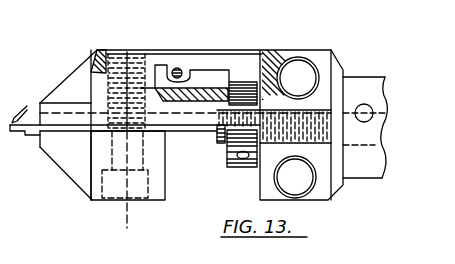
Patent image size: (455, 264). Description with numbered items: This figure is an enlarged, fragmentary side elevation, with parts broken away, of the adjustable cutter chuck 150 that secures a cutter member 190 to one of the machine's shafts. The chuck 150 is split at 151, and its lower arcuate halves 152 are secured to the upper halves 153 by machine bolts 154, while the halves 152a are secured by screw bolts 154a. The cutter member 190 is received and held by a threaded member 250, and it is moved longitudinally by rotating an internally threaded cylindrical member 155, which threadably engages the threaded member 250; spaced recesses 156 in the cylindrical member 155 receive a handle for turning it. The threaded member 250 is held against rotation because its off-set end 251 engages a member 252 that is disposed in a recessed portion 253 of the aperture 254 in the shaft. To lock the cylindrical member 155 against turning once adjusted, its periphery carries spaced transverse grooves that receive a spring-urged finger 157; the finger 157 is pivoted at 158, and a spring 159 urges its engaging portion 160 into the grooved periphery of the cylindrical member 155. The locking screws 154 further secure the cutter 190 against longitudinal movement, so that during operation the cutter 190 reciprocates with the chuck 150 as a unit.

The cutter chuck 150 is at (97, 51).
The split 151 is at (63, 126).
The lower arcuate halves 152 is at (69, 175).
The halves 152a is at (333, 181).
The upper halves 153 is at (263, 80).
The machine bolts 154 is at (115, 198).
The screw bolts 154a is at (307, 180).
The internally threaded cylindrical member 155 is at (238, 168).
The spaced recesses 156 is at (229, 160).
The spring-urged finger 157 is at (203, 58).
The pivot 158 is at (178, 68).
The spring 159 is at (104, 79).
The engaging portion 160 is at (245, 82).
The cutter member 190 is at (30, 101).
The threaded member 250 is at (218, 136).
The off-set end 251 is at (345, 128).
The member 252 is at (373, 113).
The recessed portion 253 is at (363, 177).
The aperture 254 is at (343, 180).